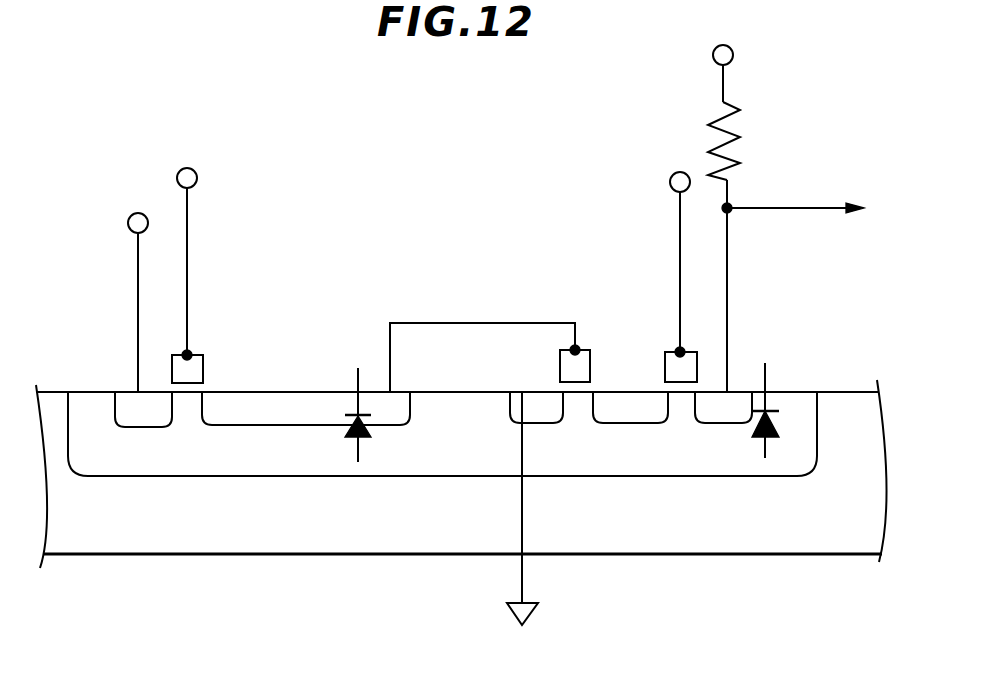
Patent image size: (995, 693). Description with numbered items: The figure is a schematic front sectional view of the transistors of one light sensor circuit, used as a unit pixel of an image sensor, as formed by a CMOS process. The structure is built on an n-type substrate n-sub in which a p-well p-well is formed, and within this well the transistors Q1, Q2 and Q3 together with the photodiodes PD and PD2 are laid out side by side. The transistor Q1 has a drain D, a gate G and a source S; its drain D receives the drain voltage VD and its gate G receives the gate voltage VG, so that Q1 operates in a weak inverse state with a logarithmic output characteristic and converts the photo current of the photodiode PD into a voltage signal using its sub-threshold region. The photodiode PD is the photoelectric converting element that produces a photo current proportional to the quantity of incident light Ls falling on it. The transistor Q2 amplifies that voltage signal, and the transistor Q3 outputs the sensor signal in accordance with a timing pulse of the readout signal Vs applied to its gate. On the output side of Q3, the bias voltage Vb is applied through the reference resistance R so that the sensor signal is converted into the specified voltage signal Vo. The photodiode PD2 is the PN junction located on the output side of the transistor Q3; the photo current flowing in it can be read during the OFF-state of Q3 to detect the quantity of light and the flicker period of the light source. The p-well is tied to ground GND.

The n-type substrate n-sub is at (461, 474).
The element p-well is at (442, 434).
The transistor Q1 is at (190, 411).
The transistor Q2 is at (579, 405).
The transistor Q3 is at (683, 407).
The drain D is at (123, 312).
The gate G is at (208, 288).
The source S is at (421, 357).
The drain voltage VD is at (138, 209).
The gate voltage VG is at (187, 163).
The readout signal Vs is at (681, 245).
The bias voltage Vb is at (724, 57).
The voltage signal Vo is at (811, 286).
The reference resistance R is at (738, 141).
The incident light Ls is at (319, 374).
The photodiode PD is at (330, 415).
The photodiode PD2 is at (794, 410).
The ground GND is at (529, 527).